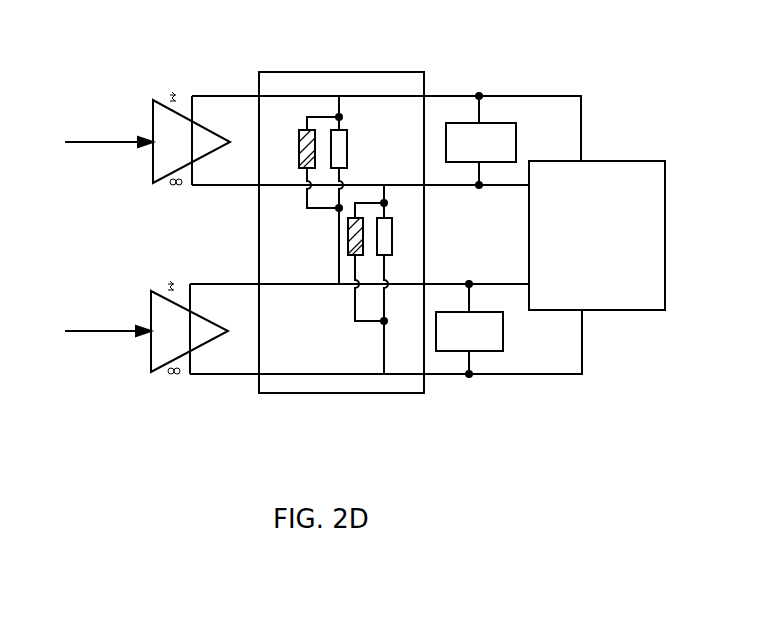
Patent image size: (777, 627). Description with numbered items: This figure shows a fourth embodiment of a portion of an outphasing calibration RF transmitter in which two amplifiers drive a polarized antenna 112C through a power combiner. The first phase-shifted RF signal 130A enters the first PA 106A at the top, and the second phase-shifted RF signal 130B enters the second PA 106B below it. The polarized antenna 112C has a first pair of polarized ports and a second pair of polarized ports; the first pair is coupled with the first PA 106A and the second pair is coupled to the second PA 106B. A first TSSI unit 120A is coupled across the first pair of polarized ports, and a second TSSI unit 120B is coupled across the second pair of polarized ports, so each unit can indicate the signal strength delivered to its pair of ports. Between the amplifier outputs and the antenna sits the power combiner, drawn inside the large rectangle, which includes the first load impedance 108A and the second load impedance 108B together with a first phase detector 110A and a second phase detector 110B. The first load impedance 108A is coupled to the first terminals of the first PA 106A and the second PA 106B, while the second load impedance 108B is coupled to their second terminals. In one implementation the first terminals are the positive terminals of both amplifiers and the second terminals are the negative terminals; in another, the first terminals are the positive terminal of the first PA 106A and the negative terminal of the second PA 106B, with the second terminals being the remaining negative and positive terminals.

The first power amplifier 106A is at (205, 152).
The second power amplifier 106B is at (203, 341).
The first phase-shifted RF signal 130A is at (103, 142).
The second phase-shifted RF signal 130B is at (115, 331).
The first phase detector 110A is at (302, 129).
The second phase detector 110B is at (350, 253).
The first load impedance 108A is at (347, 137).
The second load impedance 108B is at (393, 222).
The first transmitter signal strength indicator unit 120A is at (509, 153).
The second transmitter signal strength indicator unit 120B is at (497, 343).
The polarized antenna 112C is at (572, 275).